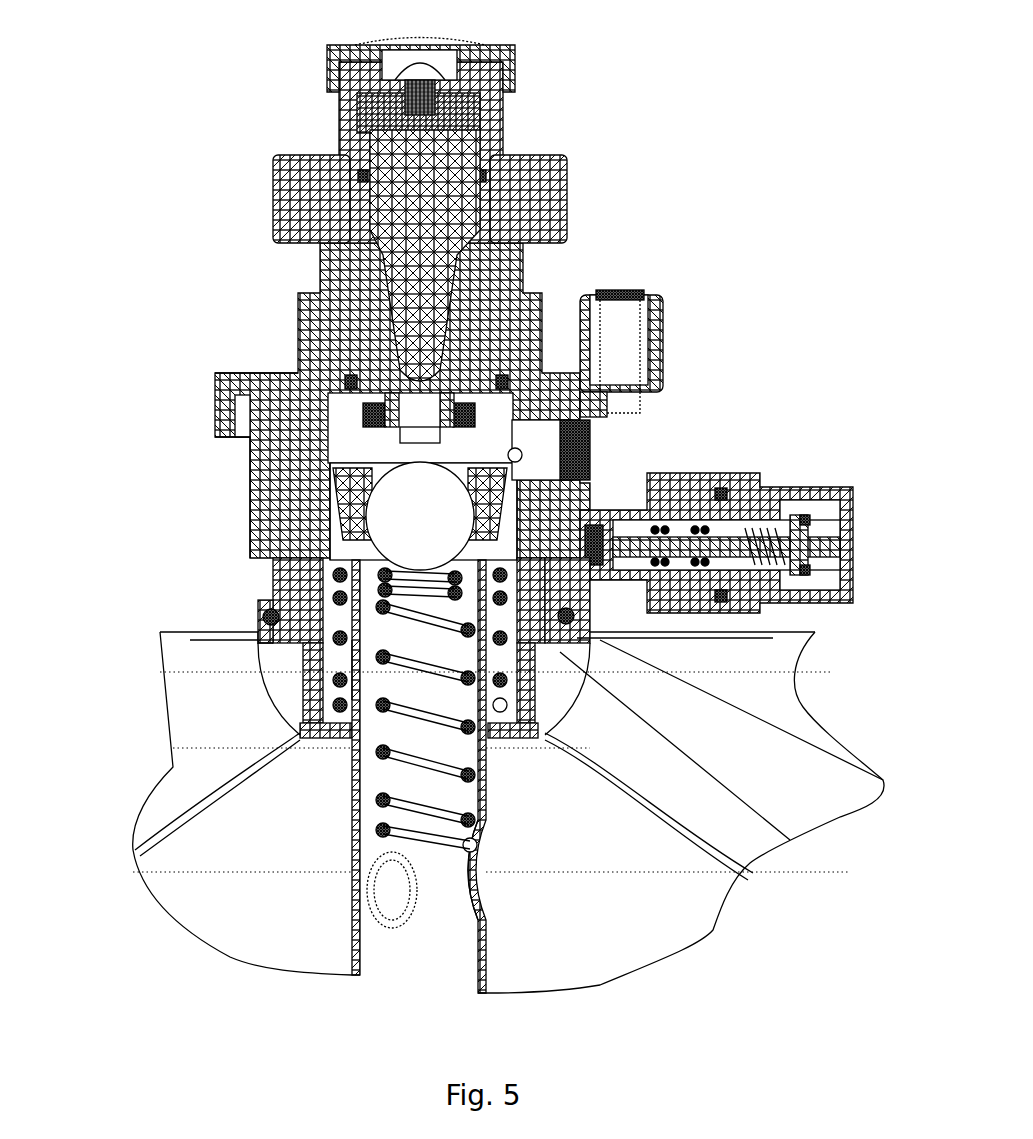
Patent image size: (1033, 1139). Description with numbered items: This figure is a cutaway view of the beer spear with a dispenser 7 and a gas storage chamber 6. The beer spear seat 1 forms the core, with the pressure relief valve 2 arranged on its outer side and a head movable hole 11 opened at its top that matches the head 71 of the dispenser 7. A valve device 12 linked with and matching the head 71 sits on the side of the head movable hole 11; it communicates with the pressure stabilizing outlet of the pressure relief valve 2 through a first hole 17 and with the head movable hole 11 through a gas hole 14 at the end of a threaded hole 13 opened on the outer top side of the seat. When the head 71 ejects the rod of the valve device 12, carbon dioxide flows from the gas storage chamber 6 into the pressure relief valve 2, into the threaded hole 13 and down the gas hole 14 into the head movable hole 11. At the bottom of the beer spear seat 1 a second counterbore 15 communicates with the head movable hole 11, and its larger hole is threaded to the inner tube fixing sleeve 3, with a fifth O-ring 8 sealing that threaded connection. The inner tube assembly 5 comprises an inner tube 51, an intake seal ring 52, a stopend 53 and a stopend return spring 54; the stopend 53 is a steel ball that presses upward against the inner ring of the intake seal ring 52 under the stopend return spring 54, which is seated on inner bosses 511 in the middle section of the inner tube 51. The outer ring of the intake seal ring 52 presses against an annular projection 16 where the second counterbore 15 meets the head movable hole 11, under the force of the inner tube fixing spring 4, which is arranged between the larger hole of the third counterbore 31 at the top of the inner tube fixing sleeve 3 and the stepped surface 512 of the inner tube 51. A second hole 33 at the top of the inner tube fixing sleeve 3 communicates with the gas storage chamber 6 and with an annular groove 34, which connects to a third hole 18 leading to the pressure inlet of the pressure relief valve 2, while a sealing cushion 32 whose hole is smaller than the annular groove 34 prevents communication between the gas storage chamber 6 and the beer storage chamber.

The beer spear seat 1 is at (273, 420).
The pressure relief valve 2 is at (757, 483).
The inner tube fixing sleeve 3 is at (300, 690).
The inner tube fixing spring 4 is at (377, 752).
The inner tube assembly 5 is at (508, 678).
The gas storage chamber 6 is at (640, 660).
The dispenser 7 is at (333, 120).
The fifth O-ring 8 is at (263, 612).
The head movable hole 11 is at (363, 442).
The valve device 12 is at (628, 318).
The threaded hole 13 is at (545, 430).
The gas hole 14 is at (525, 405).
The second counterbore 15 is at (322, 522).
The annular projection 16 is at (340, 432).
The first hole 17 is at (583, 473).
The third hole 18 is at (570, 590).
The third counterbore 31 is at (565, 745).
The sealing cushion 32 is at (300, 555).
The second hole 33 is at (605, 620).
The annular groove 34 is at (312, 590).
The inner tube 51 is at (442, 945).
The intake seal ring 52 is at (332, 468).
The stopend 53 is at (712, 753).
The stopend return spring 54 is at (488, 823).
The head 71 is at (482, 318).
The inner boss 511 is at (475, 890).
The stepped surface 512 is at (350, 660).